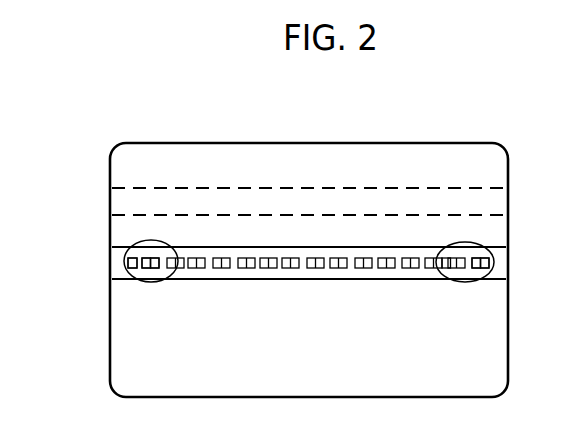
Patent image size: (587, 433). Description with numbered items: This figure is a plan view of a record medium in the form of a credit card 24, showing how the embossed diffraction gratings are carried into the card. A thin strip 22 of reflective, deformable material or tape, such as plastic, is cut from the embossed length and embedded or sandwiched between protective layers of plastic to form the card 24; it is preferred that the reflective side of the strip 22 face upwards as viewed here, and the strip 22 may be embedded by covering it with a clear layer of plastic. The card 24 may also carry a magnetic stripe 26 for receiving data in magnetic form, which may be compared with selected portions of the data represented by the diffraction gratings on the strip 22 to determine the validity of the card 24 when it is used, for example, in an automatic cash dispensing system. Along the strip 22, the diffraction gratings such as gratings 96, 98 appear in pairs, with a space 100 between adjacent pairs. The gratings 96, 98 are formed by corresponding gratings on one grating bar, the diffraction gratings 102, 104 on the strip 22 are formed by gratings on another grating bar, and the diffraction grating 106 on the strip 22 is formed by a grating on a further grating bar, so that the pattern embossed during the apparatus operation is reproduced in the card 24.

The strip 22 is at (303, 274).
The credit card 24 is at (333, 143).
The magnetic stripe 26 is at (228, 186).
The diffraction grating 96 is at (485, 263).
The diffraction grating 98 is at (477, 264).
The space 100 is at (442, 268).
The diffraction grating 102 is at (156, 266).
The diffraction grating 104 is at (145, 266).
The diffraction grating 106 is at (127, 264).